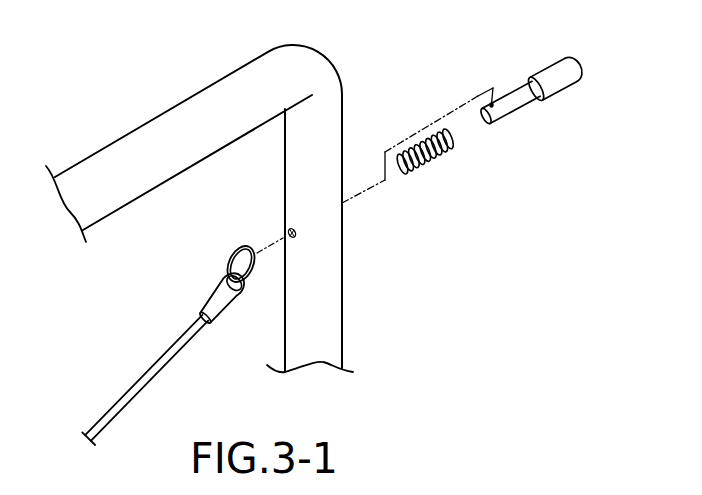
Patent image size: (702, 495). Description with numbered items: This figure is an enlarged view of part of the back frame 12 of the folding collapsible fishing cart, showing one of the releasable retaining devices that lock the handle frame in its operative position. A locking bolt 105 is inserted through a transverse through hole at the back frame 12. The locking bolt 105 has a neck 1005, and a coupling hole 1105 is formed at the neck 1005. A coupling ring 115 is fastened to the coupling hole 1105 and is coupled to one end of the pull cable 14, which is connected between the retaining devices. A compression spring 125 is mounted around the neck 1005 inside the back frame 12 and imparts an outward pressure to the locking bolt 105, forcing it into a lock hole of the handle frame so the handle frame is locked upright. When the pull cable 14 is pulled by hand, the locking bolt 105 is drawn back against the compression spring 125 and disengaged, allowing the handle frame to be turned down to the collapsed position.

The back frame 12 is at (115, 143).
The pull cable 14 is at (148, 371).
The coupling ring 115 is at (231, 255).
The compression spring 125 is at (428, 167).
The locking bolt 105 is at (568, 85).
The neck 1005 is at (512, 107).
The coupling hole 1105 is at (493, 88).